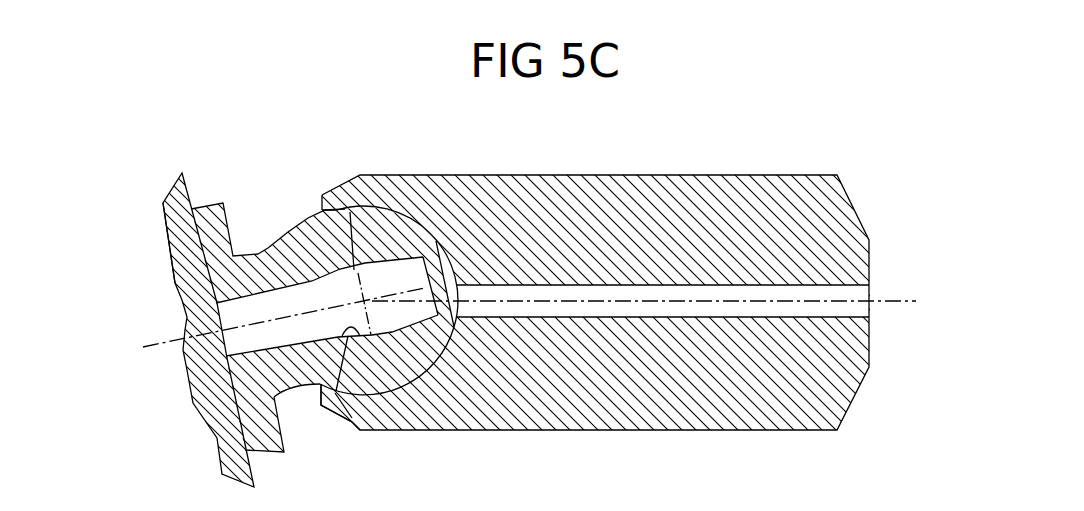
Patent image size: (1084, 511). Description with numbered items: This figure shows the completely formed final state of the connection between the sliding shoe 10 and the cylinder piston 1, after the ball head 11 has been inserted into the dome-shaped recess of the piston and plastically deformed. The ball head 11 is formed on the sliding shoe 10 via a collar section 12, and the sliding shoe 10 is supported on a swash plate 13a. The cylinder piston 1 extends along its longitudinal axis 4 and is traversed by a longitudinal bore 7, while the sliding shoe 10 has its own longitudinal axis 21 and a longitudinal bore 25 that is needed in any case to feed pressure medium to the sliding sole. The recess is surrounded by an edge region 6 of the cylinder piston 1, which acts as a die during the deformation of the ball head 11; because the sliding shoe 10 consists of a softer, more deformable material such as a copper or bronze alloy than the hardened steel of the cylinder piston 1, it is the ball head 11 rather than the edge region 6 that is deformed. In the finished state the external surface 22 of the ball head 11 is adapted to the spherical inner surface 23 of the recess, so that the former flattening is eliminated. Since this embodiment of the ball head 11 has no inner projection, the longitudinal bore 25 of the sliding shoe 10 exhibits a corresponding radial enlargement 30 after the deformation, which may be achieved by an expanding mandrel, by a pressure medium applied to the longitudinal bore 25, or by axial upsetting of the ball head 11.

The cylinder piston 1 is at (732, 190).
The longitudinal axis 4 is at (920, 302).
The edge region 6 is at (352, 421).
The longitudinal bore 7 is at (851, 311).
The sliding shoe 10 is at (207, 210).
The ball head 11 is at (380, 207).
The collar section 12 is at (258, 254).
The swash plate 13a is at (176, 232).
The longitudinal axis of the sliding shoe 21 is at (145, 349).
The external surface of the ball head 22 is at (447, 212).
The inner surface of the dome-shaped recess 23 is at (406, 382).
The longitudinal bore of the sliding shoe 25 is at (258, 355).
The radial enlargement 30 is at (331, 410).